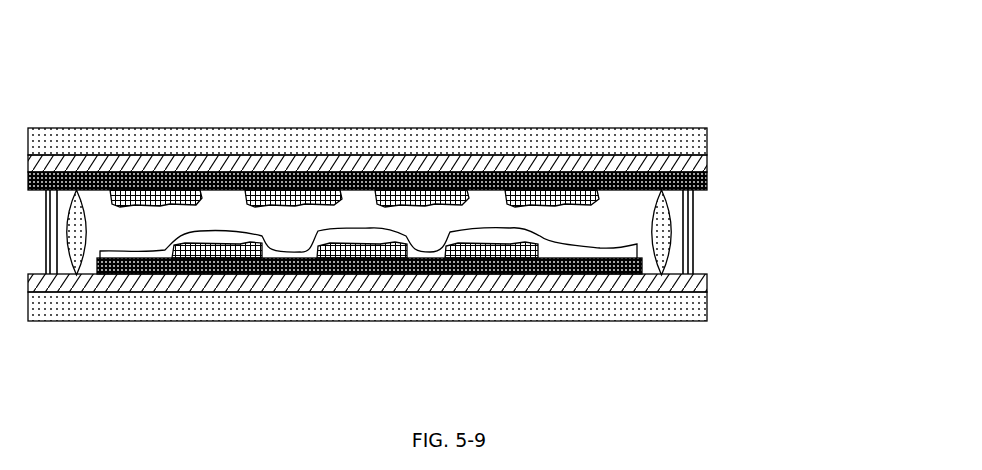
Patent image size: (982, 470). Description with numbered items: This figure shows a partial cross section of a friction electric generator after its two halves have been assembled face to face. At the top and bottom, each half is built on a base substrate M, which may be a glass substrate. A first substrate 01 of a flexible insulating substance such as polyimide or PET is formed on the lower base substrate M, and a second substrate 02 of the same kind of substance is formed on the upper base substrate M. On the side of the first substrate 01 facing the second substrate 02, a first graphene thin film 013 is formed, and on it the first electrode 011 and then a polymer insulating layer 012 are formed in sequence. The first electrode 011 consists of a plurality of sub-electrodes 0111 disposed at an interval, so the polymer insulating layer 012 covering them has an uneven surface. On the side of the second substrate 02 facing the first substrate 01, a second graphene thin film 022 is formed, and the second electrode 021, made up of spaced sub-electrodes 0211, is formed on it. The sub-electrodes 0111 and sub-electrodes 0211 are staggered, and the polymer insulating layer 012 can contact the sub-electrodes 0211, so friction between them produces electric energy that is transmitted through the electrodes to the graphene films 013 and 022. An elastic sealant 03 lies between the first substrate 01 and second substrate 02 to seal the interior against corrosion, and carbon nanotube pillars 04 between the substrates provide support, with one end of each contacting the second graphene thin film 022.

The base substrate M is at (688, 128).
The first substrate 01 is at (710, 288).
The first electrode 011 is at (355, 320).
The sub-electrodes of the first electrode 0111 is at (213, 256).
The polymer insulating layer 012 is at (640, 250).
The first graphene thin film 013 is at (645, 266).
The second substrate 02 is at (710, 163).
The second electrode 021 is at (354, 126).
The sub-electrodes of the second electrode 0211 is at (141, 195).
The second graphene thin film 022 is at (710, 182).
The elastic sealant 03 is at (676, 211).
The carbon nanotube pillars 04 is at (696, 232).